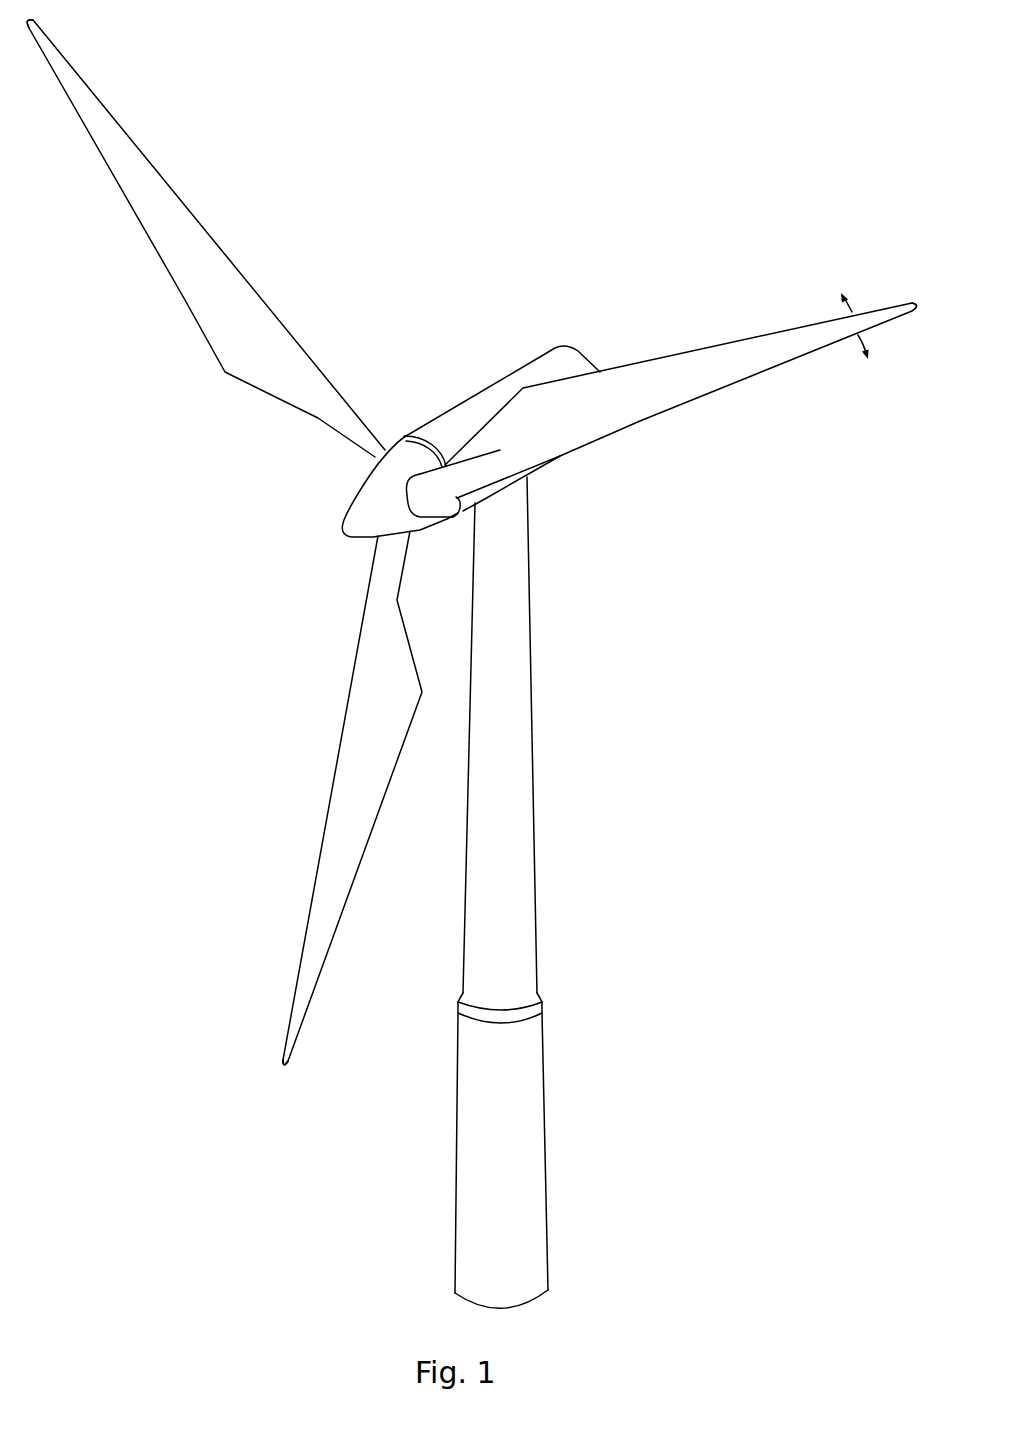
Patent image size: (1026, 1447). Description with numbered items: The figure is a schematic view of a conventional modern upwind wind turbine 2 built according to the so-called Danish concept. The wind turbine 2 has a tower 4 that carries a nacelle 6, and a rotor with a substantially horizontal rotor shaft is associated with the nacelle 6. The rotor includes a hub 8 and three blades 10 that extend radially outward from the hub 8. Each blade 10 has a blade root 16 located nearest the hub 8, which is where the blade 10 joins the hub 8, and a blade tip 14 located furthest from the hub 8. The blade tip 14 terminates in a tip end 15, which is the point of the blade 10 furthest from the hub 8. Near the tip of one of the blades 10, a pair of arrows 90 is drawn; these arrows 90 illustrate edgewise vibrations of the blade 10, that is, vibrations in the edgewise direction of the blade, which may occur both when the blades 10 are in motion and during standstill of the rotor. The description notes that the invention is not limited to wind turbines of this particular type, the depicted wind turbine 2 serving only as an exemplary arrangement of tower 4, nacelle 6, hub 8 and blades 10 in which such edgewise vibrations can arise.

The wind turbine 2 is at (648, 824).
The tower 4 is at (522, 741).
The nacelle 6 is at (463, 415).
The hub 8 is at (363, 507).
The blade 10 is at (242, 344).
The blade tip 14 is at (45, 50).
The tip end 15 is at (285, 1067).
The blade root 16 is at (370, 458).
The arrows 90 is at (838, 338).